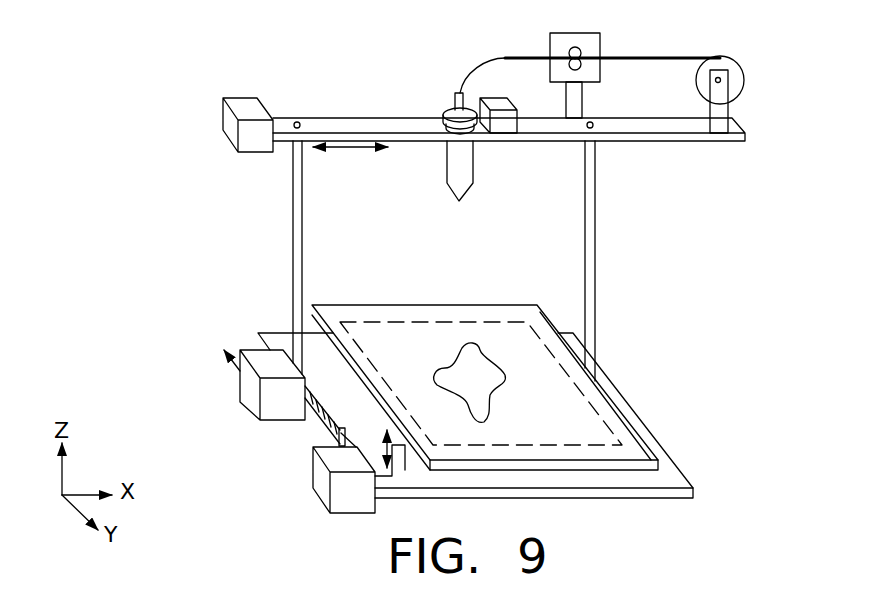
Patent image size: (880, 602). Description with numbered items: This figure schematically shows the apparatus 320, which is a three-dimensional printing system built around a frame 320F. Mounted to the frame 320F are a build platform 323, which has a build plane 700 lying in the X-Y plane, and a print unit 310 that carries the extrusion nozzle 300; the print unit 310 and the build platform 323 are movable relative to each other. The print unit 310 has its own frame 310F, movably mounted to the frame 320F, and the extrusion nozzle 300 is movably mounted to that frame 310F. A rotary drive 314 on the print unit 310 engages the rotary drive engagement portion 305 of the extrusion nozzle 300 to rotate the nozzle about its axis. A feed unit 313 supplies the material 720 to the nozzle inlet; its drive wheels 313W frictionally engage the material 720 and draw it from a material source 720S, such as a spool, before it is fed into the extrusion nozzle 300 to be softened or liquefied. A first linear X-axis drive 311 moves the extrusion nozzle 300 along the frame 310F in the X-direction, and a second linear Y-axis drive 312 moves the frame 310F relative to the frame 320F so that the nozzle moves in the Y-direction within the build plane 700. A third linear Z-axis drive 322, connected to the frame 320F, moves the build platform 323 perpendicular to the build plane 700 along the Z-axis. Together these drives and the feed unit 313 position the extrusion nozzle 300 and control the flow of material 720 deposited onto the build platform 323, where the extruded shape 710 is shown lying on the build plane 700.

The extrusion nozzle 300 is at (445, 190).
The rotary drive engagement portion 305 is at (442, 110).
The print unit 310 is at (335, 73).
The frame 310F is at (595, 186).
The first linear (X-axis) drive 311 is at (227, 143).
The second linear (Y-axis) drive 312 is at (262, 400).
The feed unit 313 is at (600, 85).
The drive wheels 313W is at (577, 47).
The rotary drive 314 is at (507, 148).
The apparatus 320 is at (250, 468).
The frame 320F is at (633, 500).
The third linear (Z-axis) drive 322 is at (327, 487).
The build platform 323 is at (638, 450).
The build plane 700 is at (573, 408).
The dispensed pattern 710 is at (478, 350).
The material 720 is at (660, 58).
The material source 720S is at (735, 66).